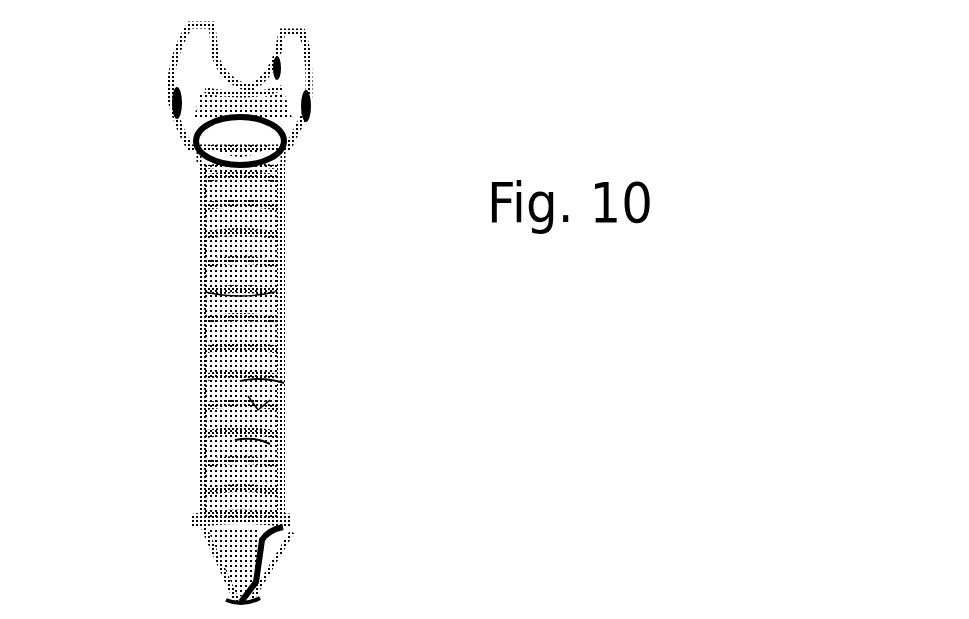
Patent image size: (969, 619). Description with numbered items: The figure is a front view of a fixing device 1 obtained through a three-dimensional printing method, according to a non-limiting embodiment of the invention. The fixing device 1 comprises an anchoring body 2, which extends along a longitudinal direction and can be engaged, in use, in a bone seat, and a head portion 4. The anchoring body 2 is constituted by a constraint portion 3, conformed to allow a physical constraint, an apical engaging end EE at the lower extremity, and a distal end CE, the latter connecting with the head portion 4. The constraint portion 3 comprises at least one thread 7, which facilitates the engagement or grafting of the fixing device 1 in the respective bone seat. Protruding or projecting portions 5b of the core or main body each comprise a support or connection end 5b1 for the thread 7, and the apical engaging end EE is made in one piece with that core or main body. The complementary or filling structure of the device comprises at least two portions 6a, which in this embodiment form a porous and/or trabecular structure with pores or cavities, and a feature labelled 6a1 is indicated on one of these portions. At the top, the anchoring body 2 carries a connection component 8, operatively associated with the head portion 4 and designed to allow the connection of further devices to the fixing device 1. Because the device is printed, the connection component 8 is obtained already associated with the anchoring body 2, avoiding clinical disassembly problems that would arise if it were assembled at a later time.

The fixing device 1 is at (105, 86).
The anchoring body 2 is at (166, 153).
The constraint portion 3 is at (286, 232).
The head portion 4 is at (253, 143).
The protruding or projecting portion 5b is at (253, 440).
The support or connection end 5b1 is at (255, 401).
The portion of the complementary or filling structure 6a is at (262, 280).
The thread crest 6a1 is at (267, 382).
The thread 7 is at (230, 301).
The connection component 8 is at (305, 78).
The distal end CE is at (228, 166).
The apical engaging end EE is at (203, 555).